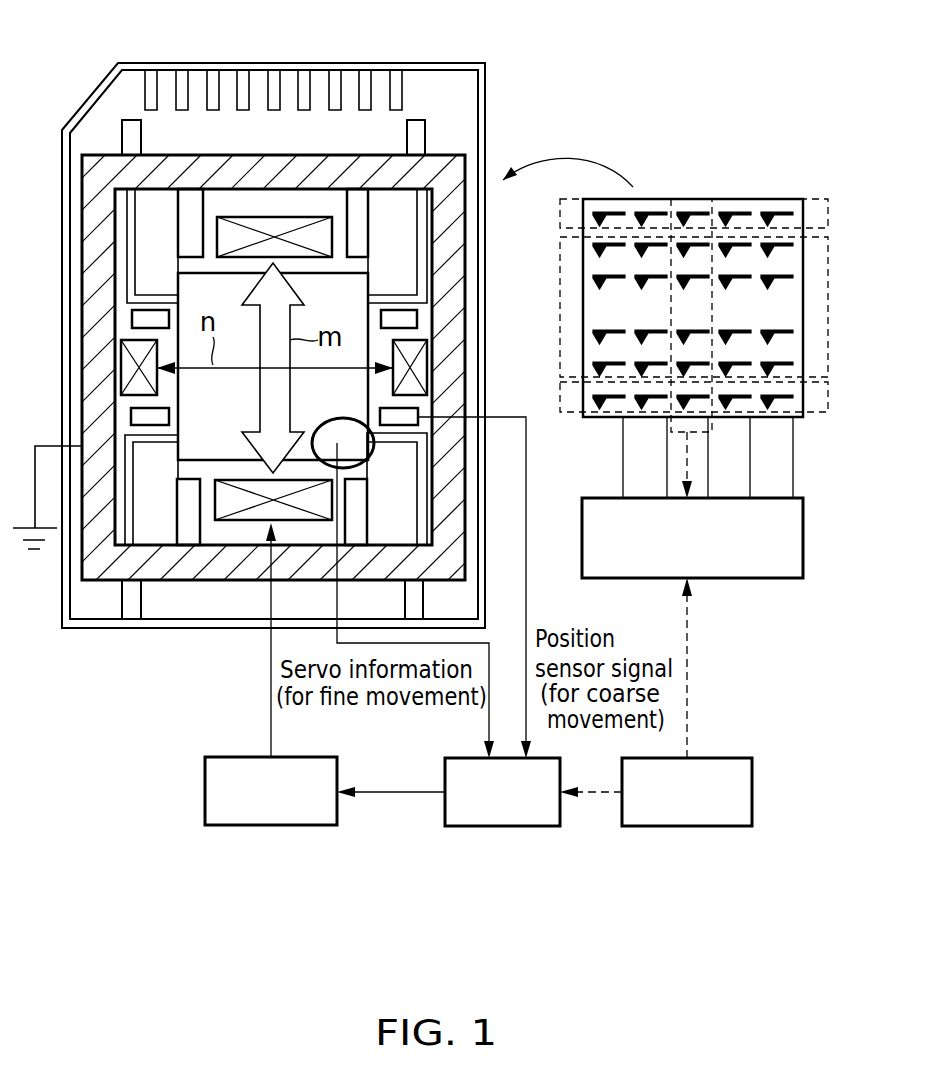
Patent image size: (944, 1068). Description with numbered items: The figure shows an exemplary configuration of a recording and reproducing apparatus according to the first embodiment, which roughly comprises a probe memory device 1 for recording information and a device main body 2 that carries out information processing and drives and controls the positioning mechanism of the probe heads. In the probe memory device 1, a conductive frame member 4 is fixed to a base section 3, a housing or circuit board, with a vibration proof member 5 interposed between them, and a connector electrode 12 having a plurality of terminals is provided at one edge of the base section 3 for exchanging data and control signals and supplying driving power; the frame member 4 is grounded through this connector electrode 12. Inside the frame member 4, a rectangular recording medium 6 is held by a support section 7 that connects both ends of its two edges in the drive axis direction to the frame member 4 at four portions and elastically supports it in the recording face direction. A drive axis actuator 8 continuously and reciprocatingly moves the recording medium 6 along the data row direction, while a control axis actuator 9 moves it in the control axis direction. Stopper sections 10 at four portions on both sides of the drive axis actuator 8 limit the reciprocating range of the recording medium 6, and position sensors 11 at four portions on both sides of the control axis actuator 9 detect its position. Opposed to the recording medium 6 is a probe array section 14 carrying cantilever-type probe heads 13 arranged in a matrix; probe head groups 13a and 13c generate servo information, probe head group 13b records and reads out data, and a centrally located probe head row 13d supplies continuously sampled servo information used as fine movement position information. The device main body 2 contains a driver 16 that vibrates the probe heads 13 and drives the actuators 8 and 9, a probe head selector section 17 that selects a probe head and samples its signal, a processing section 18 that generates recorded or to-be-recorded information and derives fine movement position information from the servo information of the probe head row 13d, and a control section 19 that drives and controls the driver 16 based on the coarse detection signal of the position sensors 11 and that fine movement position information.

The probe memory device 1 is at (568, 110).
The device main body 2 is at (363, 871).
The base section 3 is at (278, 321).
The frame member 4 is at (436, 367).
The vibration proof member 5 is at (270, 369).
The recording medium 6 is at (269, 378).
The support section 7 is at (271, 401).
The drive axis actuator 8 is at (273, 365).
The control axis actuator 9 is at (270, 368).
The stopper sections 10 is at (273, 401).
The position sensors 11 is at (276, 529).
The connector electrode 12 is at (273, 59).
The probe heads 13 is at (737, 310).
The probe head group 13a is at (724, 213).
The probe head group 13b is at (725, 307).
The probe head group 13c is at (723, 397).
The probe head row 13d is at (715, 287).
The probe array section 14 is at (701, 284).
The driver 16 is at (271, 822).
The probe head selector section 17 is at (725, 538).
The processing section 18 is at (687, 823).
The control section 19 is at (502, 823).